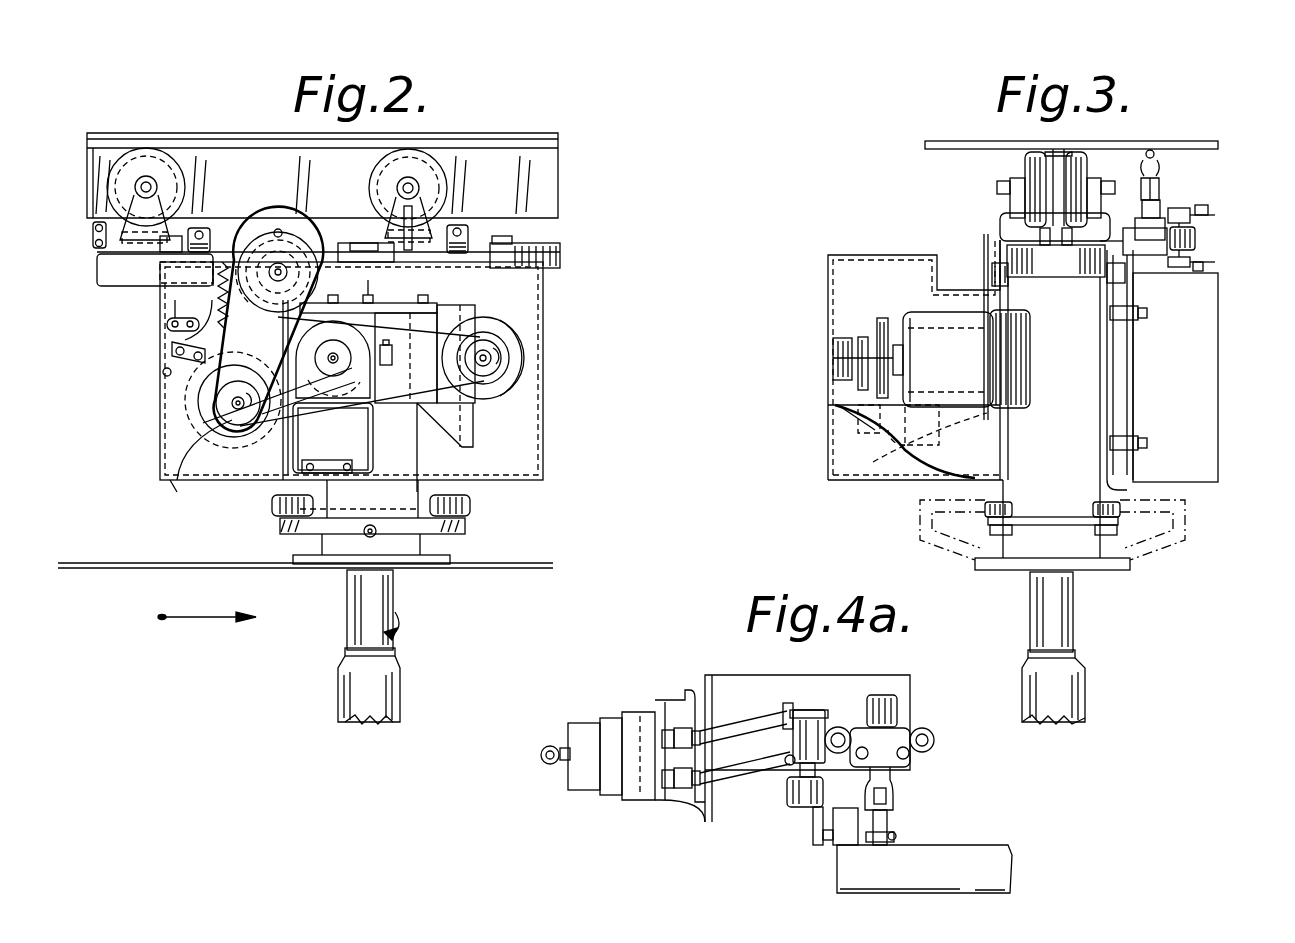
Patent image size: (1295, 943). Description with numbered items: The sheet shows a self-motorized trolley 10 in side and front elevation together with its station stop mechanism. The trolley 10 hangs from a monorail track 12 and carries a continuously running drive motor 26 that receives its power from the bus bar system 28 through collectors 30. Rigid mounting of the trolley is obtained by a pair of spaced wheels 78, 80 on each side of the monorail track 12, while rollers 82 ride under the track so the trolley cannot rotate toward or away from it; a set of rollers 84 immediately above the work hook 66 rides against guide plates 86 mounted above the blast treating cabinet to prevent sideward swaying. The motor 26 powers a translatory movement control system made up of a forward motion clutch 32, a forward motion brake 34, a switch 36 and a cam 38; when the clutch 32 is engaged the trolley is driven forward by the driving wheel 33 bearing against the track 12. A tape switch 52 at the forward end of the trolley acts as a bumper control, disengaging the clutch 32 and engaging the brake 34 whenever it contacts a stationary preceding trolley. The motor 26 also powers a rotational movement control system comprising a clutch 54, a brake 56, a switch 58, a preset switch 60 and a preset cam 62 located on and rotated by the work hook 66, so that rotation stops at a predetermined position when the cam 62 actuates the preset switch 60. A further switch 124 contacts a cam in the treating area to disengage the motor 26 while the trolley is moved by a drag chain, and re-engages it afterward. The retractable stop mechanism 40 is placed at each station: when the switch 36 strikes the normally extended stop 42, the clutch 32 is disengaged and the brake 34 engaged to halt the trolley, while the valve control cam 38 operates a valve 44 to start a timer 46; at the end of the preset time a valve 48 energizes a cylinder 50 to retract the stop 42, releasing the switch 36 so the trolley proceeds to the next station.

In FIG. 2, the trolley 10 is at (548, 420).
In FIG. 3, the trolley 10 is at (822, 328).
In FIG. 2, the monorail track 12 is at (536, 138).
In FIG. 3, the monorail track 12 is at (1045, 212).
In FIG. 2, the drive motor 26 is at (514, 354).
In FIG. 3, the drive motor 26 is at (1005, 362).
In FIG. 3, the bus bar system 28 is at (1158, 152).
In FIG. 3, the collectors 30 is at (1162, 186).
In FIG. 2, the forward motion clutch 32 is at (201, 462).
In FIG. 2, the driving wheel 33 is at (284, 230).
In FIG. 2, the forward motion brake 34 is at (205, 426).
In FIG. 2, the switch 36 is at (93, 240).
In FIG. 4A, the switch 36 is at (818, 838).
In FIG. 2, the cam 38 is at (173, 238).
In FIG. 4A, the cam 38 is at (888, 822).
In FIG. 4A, the retractable stop mechanism 40 is at (898, 674).
In FIG. 4A, the stop 42 is at (790, 782).
In FIG. 4A, the valve 44 is at (892, 800).
In FIG. 4A, the timer 46 is at (585, 735).
In FIG. 4A, the valve 48 is at (672, 722).
In FIG. 4A, the cylinder 50 is at (813, 710).
In FIG. 2, the tape switch 52 is at (562, 250).
In FIG. 3, the clutch 54 is at (878, 428).
In FIG. 3, the brake 56 is at (914, 445).
In FIG. 3, the switch 58 is at (1200, 213).
In FIG. 2, the preset switch 60 is at (346, 242).
In FIG. 2, the preset cam 62 is at (364, 236).
In FIG. 2, the work hook 66 is at (384, 590).
In FIG. 3, the work hook 66 is at (1078, 616).
In FIG. 2, the wheel 78 is at (437, 180).
In FIG. 3, the wheel 78 is at (1032, 176).
In FIG. 2, the wheel 80 is at (160, 162).
In FIG. 2, the rollers 82 is at (212, 228).
In FIG. 3, the rollers 82 is at (998, 232).
In FIG. 2, the rollers 84 is at (270, 503).
In FIG. 3, the rollers 84 is at (1095, 505).
In FIG. 3, the guide plates 86 is at (920, 506).
In FIG. 3, the switch 124 is at (1202, 263).